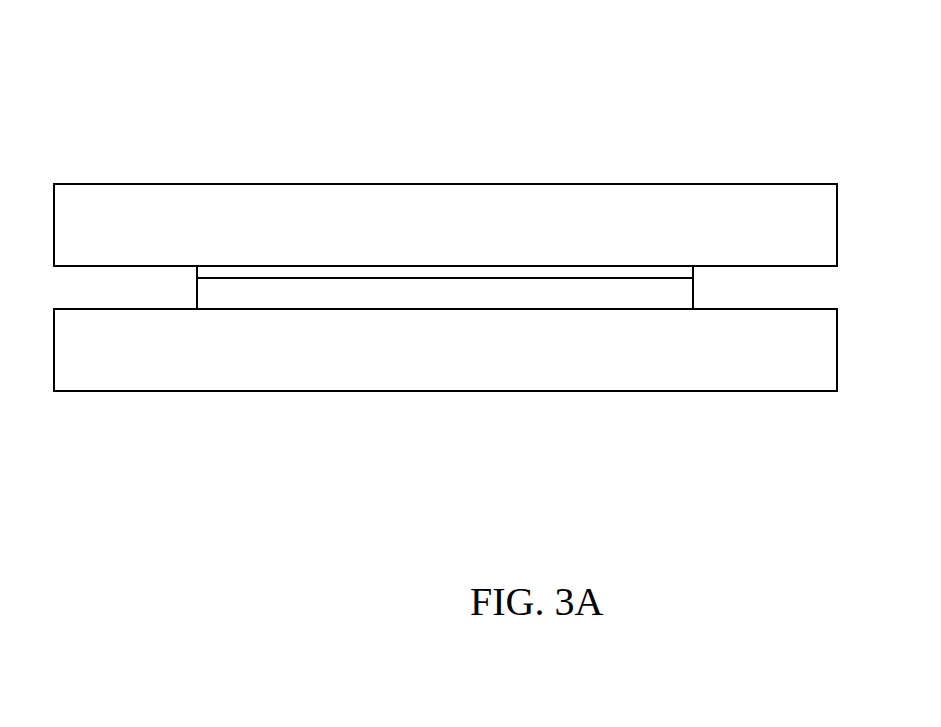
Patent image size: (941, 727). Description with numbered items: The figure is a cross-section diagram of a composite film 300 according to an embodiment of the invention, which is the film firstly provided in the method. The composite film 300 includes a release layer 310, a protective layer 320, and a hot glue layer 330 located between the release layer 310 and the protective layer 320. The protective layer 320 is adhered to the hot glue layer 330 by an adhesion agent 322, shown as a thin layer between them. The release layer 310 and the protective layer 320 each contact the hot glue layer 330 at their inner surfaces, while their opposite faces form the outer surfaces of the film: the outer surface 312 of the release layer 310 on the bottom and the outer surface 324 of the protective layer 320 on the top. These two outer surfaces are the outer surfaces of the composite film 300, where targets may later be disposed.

The composite film 300 is at (782, 120).
The release layer 310 is at (823, 350).
The outer surface of the release layer 312 is at (542, 392).
The protective layer 320 is at (823, 228).
The adhesion agent 322 is at (431, 273).
The outer surface of the protective layer 324 is at (542, 184).
The hot glue layer 330 is at (682, 294).